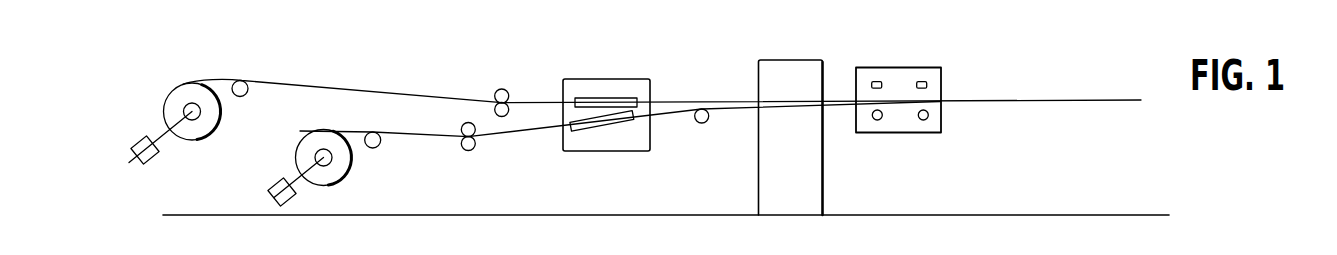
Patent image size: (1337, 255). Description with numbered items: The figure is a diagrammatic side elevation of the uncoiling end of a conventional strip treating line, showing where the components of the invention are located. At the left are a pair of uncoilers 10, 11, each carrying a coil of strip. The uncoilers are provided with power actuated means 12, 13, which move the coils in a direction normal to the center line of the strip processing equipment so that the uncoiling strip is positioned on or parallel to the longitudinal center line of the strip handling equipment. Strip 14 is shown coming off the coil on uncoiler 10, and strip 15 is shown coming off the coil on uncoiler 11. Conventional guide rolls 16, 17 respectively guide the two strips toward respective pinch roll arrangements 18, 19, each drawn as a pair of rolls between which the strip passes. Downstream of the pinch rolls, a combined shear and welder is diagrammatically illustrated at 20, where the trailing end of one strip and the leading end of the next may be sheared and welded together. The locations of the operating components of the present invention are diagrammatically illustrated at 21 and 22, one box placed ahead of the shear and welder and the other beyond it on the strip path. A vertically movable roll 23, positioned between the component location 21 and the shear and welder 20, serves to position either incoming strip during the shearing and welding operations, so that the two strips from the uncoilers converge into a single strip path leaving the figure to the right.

The uncoiler 10 is at (188, 88).
The uncoiler 11 is at (308, 140).
The power actuated means 12 is at (133, 154).
The power actuated means 13 is at (268, 189).
The strip 14 is at (417, 93).
The strip 15 is at (422, 140).
The guide roll 16 is at (240, 97).
The guide roll 17 is at (373, 150).
The pinch roll arrangement 18 is at (499, 88).
The pinch roll arrangement 19 is at (476, 148).
The combined shear and welder 20 is at (800, 59).
The operating components location 21 is at (625, 78).
The operating components location 22 is at (918, 68).
The vertically movable roll 23 is at (702, 124).